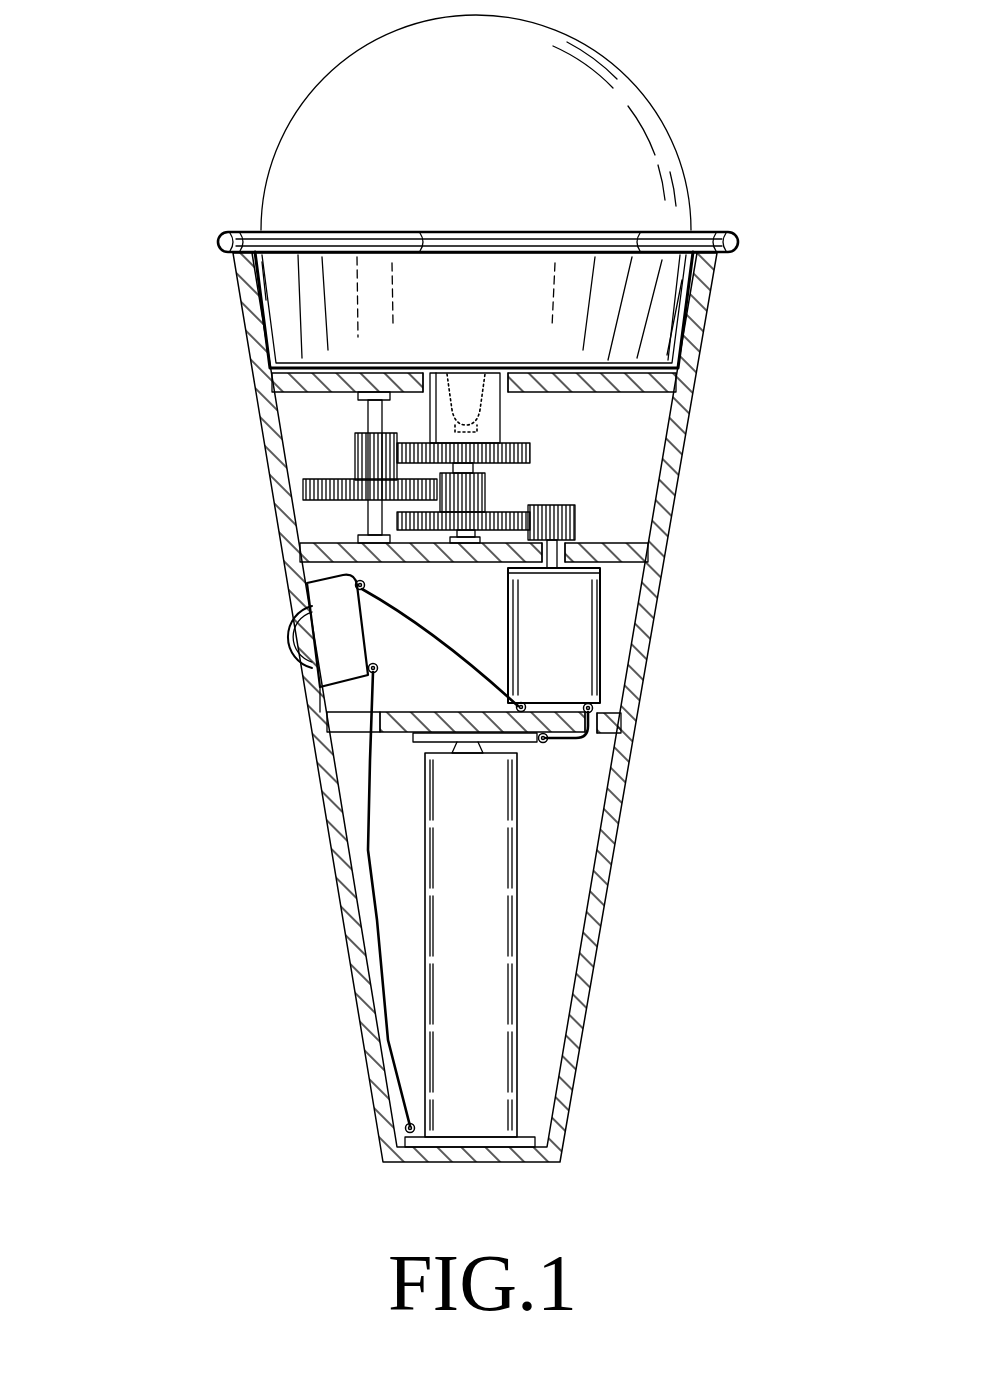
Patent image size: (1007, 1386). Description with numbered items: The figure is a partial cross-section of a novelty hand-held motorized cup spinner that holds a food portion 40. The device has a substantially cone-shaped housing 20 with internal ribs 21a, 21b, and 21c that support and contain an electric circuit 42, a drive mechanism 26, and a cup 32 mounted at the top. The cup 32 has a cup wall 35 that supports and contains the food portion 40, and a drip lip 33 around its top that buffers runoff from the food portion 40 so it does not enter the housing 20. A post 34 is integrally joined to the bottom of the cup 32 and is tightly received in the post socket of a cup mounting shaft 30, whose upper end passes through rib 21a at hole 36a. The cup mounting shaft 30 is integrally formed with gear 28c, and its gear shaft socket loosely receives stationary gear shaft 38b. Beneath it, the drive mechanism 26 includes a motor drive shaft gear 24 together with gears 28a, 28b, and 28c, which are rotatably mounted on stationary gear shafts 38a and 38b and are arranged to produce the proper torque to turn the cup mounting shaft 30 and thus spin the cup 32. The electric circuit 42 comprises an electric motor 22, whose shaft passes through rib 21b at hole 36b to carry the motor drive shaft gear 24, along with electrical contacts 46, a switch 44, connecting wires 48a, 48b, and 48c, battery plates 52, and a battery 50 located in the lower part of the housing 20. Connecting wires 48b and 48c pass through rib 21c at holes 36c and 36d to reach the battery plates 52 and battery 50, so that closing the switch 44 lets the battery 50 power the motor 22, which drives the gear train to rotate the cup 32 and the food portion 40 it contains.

The housing 20 is at (268, 406).
The rib 21a is at (293, 385).
The rib 21b is at (635, 553).
The rib 21c is at (350, 722).
The electric motor 22 is at (575, 628).
The motor drive shaft gear 24 is at (562, 508).
The drive mechanism 26 is at (346, 450).
The gear 28a is at (477, 495).
The gear 28b is at (317, 493).
The gear 28c is at (532, 452).
The cup mounting shaft 30 is at (490, 423).
The cup 32 is at (660, 315).
The drip lip 33 is at (738, 240).
The post 34 is at (468, 402).
The cup wall 35 is at (265, 285).
The hole 36a is at (427, 373).
The hole 36b is at (567, 558).
The hole 36c is at (365, 712).
The hole 36d is at (598, 740).
The stationary gear shaft 38a is at (368, 513).
The stationary gear shaft 38b is at (460, 533).
The food portion 40 is at (320, 102).
The electric circuit 42 is at (358, 851).
The switch 44 is at (295, 628).
The electrical contacts 46 is at (345, 581).
The connecting wire 48a is at (425, 637).
The connecting wire 48b is at (377, 902).
The connecting wire 48c is at (575, 742).
The battery 50 is at (473, 902).
The battery plates 52 is at (420, 735).